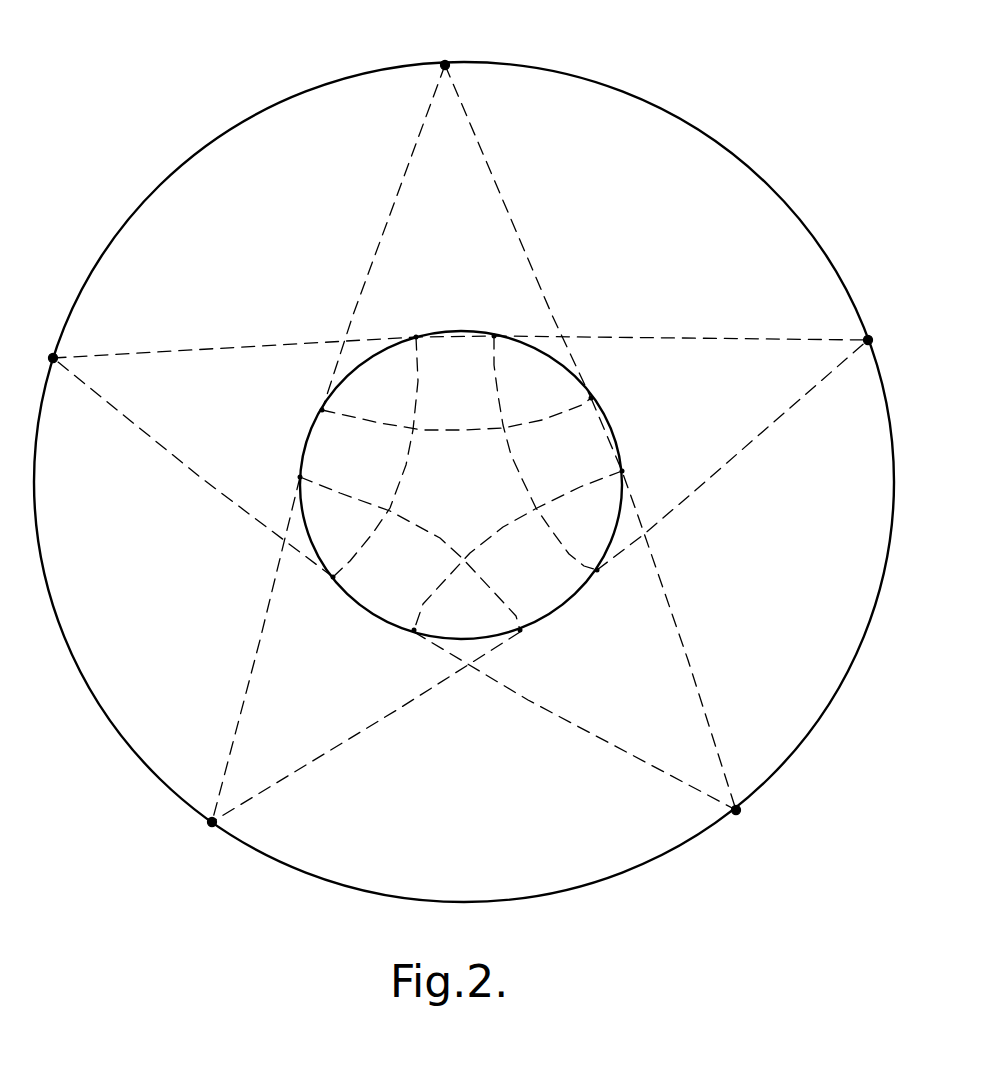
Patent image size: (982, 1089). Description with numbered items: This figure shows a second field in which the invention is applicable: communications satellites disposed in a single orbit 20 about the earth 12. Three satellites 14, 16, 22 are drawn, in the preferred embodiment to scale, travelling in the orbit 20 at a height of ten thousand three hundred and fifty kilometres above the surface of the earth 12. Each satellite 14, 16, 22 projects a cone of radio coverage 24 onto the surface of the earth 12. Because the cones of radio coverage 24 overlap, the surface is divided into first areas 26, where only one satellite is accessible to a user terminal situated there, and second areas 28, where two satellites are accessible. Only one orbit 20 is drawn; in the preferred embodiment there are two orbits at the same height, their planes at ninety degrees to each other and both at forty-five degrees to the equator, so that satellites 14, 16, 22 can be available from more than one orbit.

The earth 12 is at (550, 592).
The satellite 14 is at (445, 65).
The satellite 16 is at (868, 340).
The orbit 20 is at (811, 728).
The satellite 22 is at (736, 810).
The cone of radio coverage 24 is at (508, 242).
The first area 26 is at (461, 335).
The second area 28 is at (540, 368).